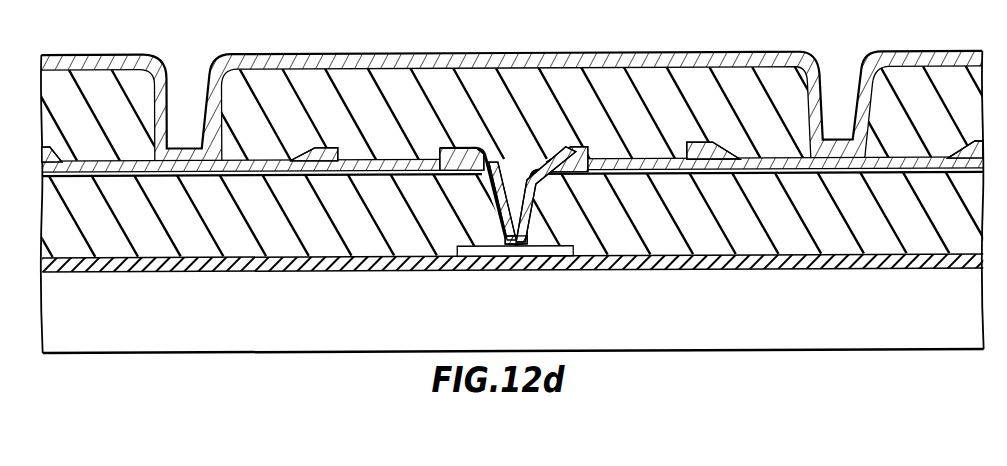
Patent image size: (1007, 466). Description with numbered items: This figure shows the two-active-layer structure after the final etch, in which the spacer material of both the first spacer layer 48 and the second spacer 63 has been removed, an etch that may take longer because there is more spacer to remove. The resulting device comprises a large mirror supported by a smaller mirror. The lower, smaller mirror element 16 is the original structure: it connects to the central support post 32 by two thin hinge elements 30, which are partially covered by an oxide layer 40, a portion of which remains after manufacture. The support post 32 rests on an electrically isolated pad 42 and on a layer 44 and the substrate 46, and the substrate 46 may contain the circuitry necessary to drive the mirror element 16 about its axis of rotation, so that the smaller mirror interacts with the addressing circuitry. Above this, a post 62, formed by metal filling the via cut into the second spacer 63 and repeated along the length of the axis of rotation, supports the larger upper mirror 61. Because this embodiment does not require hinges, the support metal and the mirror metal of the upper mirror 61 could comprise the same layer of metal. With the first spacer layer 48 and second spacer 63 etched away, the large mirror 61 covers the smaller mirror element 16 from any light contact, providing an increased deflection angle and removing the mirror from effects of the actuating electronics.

The mirror element 16 is at (857, 168).
The hinge elements 30 is at (395, 160).
The support post 32 is at (525, 162).
The oxide layer 40 is at (320, 148).
The electrically isolated pad 42 is at (568, 247).
The layer 44 is at (372, 258).
The substrate 46 is at (822, 319).
The first spacer layer 48 is at (680, 229).
The mirror 61 is at (707, 52).
The post 62 is at (832, 78).
The second spacer 63 is at (767, 114).